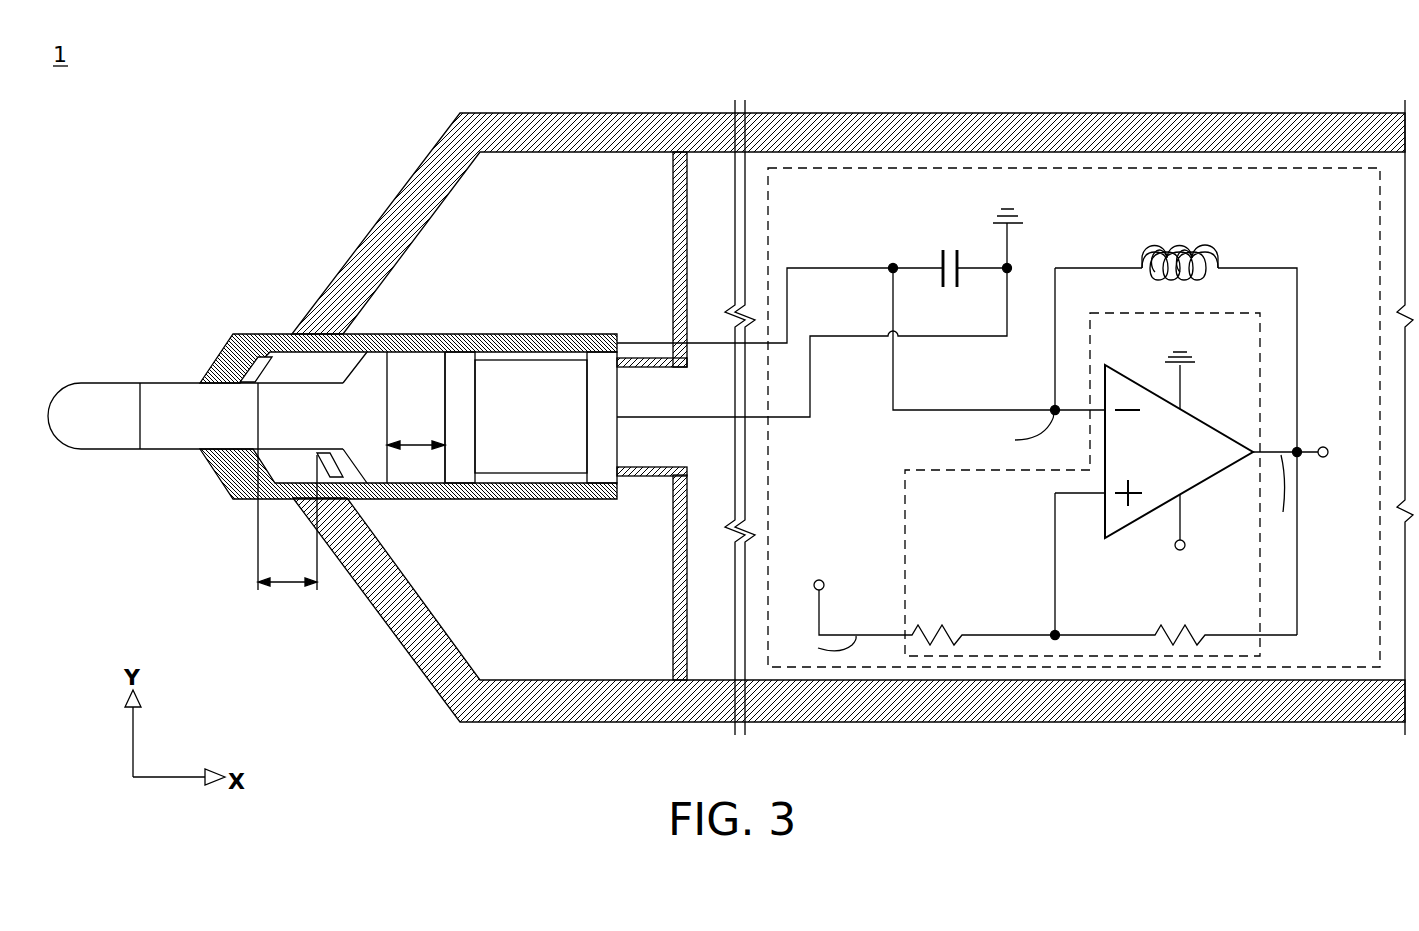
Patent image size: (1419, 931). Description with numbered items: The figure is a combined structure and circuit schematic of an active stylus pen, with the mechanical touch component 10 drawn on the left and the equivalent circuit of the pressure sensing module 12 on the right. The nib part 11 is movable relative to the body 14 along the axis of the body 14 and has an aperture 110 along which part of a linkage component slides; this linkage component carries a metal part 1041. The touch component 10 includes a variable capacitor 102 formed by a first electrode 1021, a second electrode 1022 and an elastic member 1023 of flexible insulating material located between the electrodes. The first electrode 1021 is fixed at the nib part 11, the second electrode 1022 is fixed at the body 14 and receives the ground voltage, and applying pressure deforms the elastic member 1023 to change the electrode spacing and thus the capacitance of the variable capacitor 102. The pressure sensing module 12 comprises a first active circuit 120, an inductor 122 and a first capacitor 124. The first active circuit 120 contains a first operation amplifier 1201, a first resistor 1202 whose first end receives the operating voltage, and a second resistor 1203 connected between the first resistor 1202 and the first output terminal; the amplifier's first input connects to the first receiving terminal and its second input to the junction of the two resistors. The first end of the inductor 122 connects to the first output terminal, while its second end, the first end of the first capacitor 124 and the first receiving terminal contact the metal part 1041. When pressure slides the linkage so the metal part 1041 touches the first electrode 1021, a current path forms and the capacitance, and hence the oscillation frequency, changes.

The touch component 10 is at (75, 455).
The metal part 1041 is at (180, 432).
The nib part 11 is at (253, 333).
The aperture 110 is at (415, 385).
The variable capacitor 102 is at (531, 446).
The first electrode 1021 is at (467, 485).
The second electrode 1022 is at (598, 485).
The elastic member 1023 is at (543, 385).
The pressure sensing module 12 is at (1330, 168).
The body 14 is at (712, 118).
The first active circuit 120 is at (1262, 330).
The inductor 122 is at (1188, 252).
The first capacitor 124 is at (948, 250).
The first operation amplifier 1201 is at (1213, 428).
The first resistor 1202 is at (937, 633).
The second resistor 1203 is at (1176, 614).